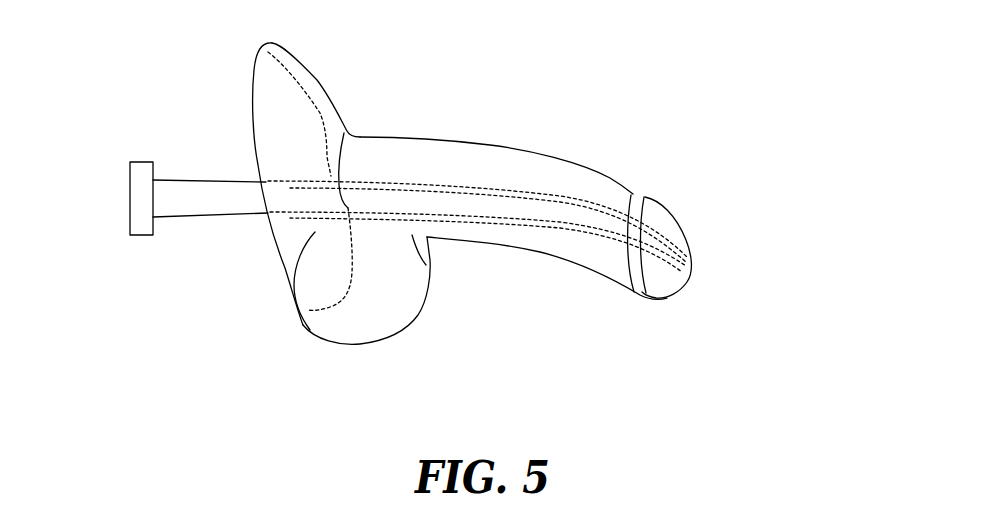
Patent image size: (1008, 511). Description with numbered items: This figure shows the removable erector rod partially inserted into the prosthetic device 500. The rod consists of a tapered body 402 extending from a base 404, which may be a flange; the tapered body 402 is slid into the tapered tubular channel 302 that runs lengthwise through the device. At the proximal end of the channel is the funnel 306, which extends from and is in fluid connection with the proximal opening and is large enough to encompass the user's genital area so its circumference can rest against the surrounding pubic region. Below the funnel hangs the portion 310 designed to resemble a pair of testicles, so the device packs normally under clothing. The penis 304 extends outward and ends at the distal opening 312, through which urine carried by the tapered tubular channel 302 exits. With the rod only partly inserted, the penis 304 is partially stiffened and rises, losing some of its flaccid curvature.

The prosthetic device assembly 500 is at (748, 168).
The funnel 306 is at (262, 83).
The penis 304 is at (473, 158).
The tapered tubular channel 302 is at (565, 218).
The distal opening 312 is at (690, 273).
The portion resembling a pair of testicles 310 is at (350, 335).
The tapered body 402 is at (238, 205).
The base 404 is at (141, 230).